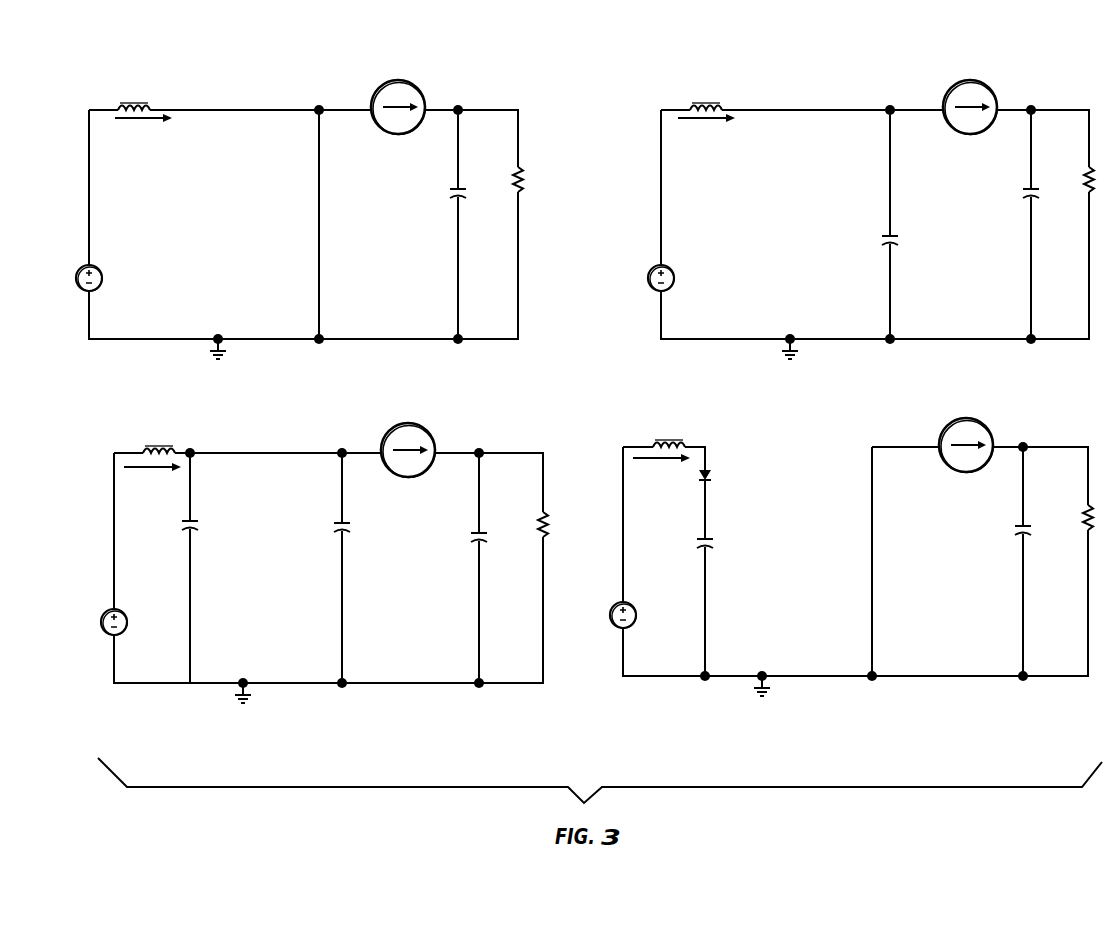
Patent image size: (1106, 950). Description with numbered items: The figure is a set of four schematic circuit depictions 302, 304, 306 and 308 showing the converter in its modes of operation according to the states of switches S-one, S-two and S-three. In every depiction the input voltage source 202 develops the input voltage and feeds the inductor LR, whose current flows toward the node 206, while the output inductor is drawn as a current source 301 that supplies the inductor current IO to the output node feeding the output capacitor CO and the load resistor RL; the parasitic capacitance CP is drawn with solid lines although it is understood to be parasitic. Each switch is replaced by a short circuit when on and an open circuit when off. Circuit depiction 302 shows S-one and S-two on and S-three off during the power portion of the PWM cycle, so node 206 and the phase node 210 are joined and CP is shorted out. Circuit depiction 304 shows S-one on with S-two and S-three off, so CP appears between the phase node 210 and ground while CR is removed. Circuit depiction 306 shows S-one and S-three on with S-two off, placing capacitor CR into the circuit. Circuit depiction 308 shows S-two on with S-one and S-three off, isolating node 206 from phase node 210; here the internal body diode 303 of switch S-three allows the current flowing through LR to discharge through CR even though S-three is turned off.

The input voltage source 202 is at (97, 268).
The node 206 is at (180, 110).
The phase node 210 is at (872, 447).
The current source 301 is at (412, 85).
The circuit depiction 302 is at (245, 261).
The internal body diode 303 is at (712, 477).
The circuit depiction 304 is at (801, 237).
The circuit depiction 306 is at (288, 614).
The circuit depiction 308 is at (820, 597).